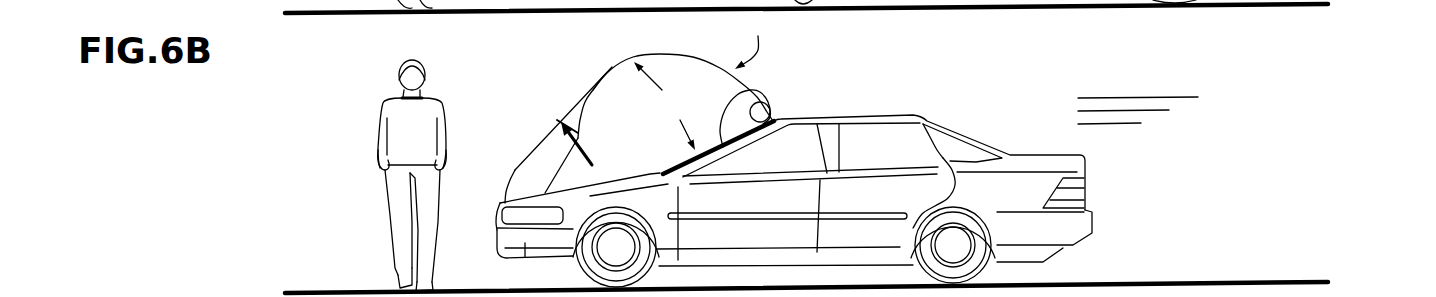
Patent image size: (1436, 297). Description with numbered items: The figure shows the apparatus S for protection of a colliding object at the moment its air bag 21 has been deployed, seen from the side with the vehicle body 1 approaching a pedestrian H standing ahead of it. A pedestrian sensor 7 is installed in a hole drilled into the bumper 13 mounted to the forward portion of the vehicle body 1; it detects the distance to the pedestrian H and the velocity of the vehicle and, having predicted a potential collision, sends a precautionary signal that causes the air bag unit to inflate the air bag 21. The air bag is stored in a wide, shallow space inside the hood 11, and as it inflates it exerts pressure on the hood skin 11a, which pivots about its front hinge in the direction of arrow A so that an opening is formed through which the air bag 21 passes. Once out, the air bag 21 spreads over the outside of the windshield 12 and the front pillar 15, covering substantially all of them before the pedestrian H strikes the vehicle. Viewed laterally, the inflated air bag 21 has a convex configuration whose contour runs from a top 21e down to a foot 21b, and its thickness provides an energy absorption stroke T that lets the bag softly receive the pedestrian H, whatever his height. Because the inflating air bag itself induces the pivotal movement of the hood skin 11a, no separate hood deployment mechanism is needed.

The vehicle body 1 is at (1023, 146).
The pedestrian sensor 7 is at (493, 233).
The hood 11 is at (523, 162).
The hood skin 11a is at (521, 166).
The windshield 12 is at (769, 103).
The bumper 13 is at (522, 262).
The front pillar 15 is at (760, 93).
The air bag 21 is at (698, 57).
The foot of the convex 21b is at (559, 119).
The top of the convex 21e is at (600, 75).
The pedestrian H is at (378, 143).
The apparatus for protection of a colliding object S is at (751, 37).
The energy absorption stroke T is at (664, 106).
The arrow A is at (569, 143).